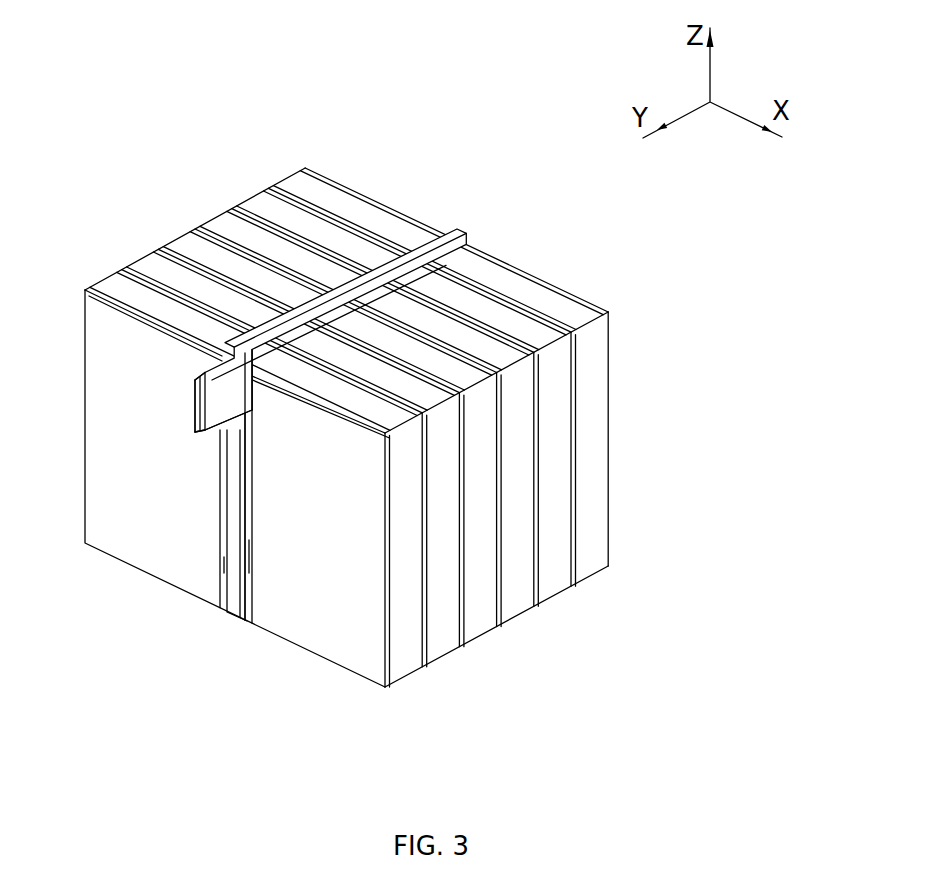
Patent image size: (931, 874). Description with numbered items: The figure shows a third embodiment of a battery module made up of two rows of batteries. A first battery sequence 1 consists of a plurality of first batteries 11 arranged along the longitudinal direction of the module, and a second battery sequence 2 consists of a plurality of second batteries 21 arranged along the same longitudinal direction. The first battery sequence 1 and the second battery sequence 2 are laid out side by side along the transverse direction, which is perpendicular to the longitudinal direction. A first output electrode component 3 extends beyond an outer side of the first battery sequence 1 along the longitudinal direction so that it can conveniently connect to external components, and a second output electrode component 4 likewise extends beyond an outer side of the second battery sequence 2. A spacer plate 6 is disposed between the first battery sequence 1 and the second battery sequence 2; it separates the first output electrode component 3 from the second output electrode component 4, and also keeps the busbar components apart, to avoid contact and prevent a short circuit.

The first battery sequence 1 is at (405, 415).
The second battery sequence 2 is at (405, 429).
The first output electrode component 3 is at (193, 405).
The second output electrode component 4 is at (232, 410).
The spacer plate 6 is at (295, 289).
The first battery 11 is at (95, 282).
The second battery 21 is at (391, 690).